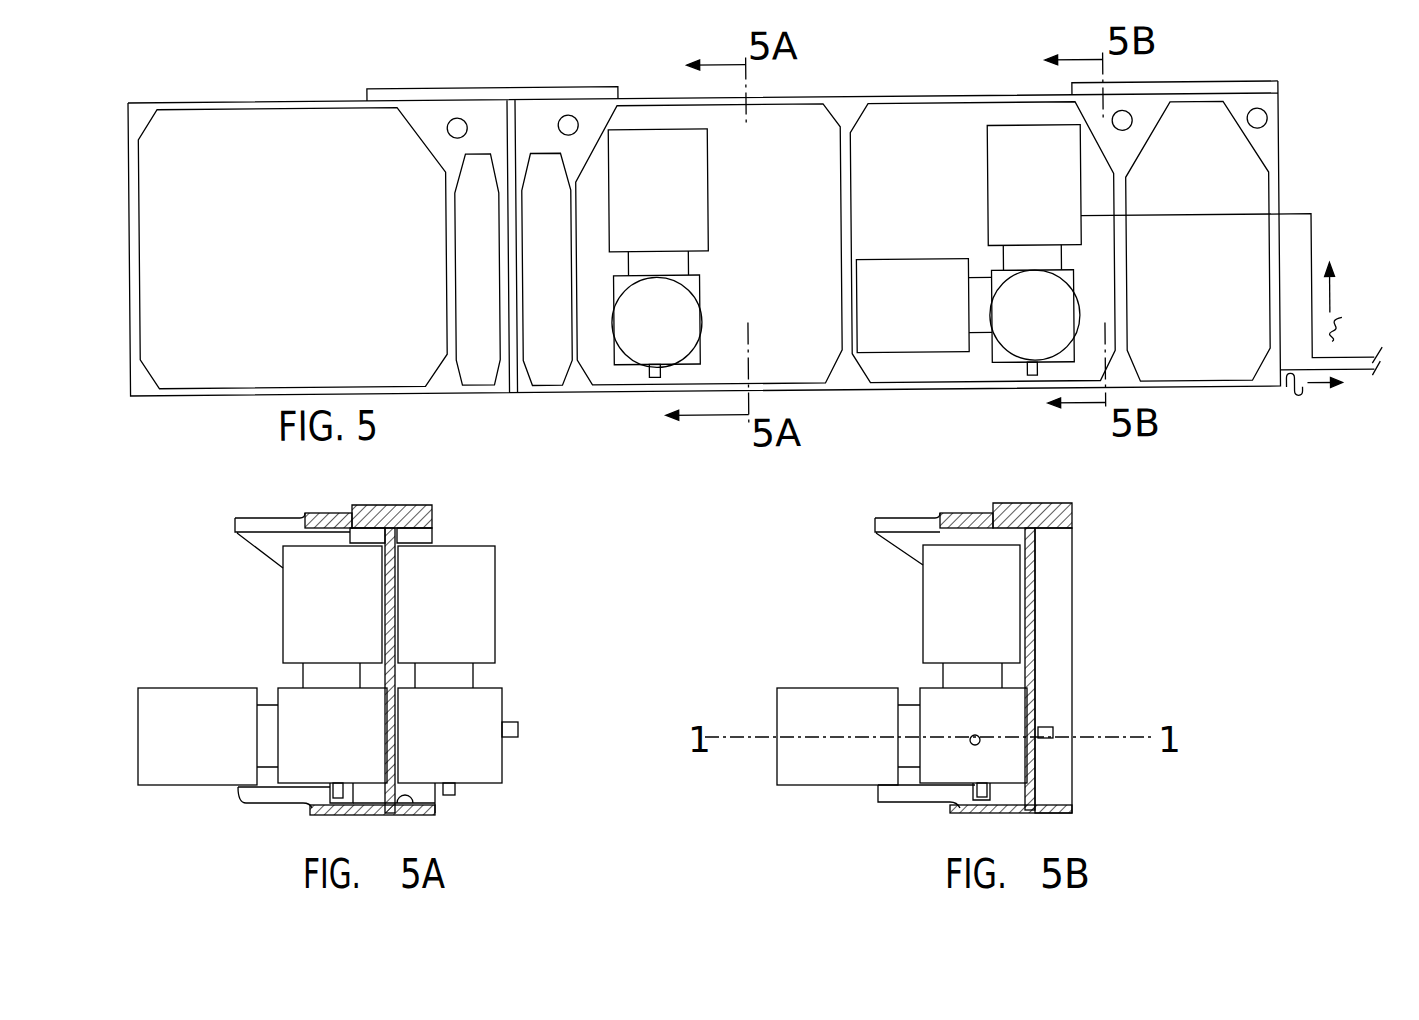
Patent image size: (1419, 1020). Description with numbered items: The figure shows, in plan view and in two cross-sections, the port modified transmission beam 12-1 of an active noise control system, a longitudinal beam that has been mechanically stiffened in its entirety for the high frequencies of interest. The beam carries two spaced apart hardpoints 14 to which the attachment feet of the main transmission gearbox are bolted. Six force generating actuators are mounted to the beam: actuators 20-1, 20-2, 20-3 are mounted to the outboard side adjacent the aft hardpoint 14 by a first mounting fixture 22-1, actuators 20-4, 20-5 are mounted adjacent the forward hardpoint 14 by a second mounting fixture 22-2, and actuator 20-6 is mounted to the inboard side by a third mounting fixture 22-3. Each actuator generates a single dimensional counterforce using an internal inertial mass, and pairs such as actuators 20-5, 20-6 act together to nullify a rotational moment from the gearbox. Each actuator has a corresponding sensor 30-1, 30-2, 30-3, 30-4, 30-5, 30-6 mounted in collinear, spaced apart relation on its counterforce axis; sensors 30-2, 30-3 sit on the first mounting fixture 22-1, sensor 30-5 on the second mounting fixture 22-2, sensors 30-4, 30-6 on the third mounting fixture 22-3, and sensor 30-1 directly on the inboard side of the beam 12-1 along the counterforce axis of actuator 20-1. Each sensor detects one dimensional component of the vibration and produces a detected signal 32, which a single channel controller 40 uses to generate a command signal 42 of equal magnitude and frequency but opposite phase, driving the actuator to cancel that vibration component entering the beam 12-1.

In FIG. 5, the hardpoint 14 is at (537, 91).
In FIG. 5A, the hardpoint 14 is at (400, 504).
In FIG. 5, the modified transmission beam 12-1 is at (314, 277).
In FIG. 5A, the modified transmission beam 12-1 is at (407, 817).
In FIG. 5B, the modified transmission beam 12-1 is at (1037, 617).
In FIG. 5, the actuator 20-1 is at (1060, 333).
In FIG. 5B, the actuator 20-1 is at (864, 743).
In FIG. 5, the actuator 20-2 is at (1058, 224).
In FIG. 5B, the actuator 20-2 is at (997, 607).
In FIG. 5, the actuator 20-3 is at (940, 320).
In FIG. 5, the actuator 20-4 is at (683, 341).
In FIG. 5A, the actuator 20-4 is at (226, 743).
In FIG. 5, the actuator 20-5 is at (683, 226).
In FIG. 5A, the actuator 20-5 is at (358, 605).
In FIG. 5A, the actuator 20-6 is at (475, 605).
In FIG. 5, the first mounting fixture 22-1 is at (997, 278).
In FIG. 5B, the first mounting fixture 22-1 is at (998, 716).
In FIG. 5, the second mounting fixture 22-2 is at (700, 292).
In FIG. 5A, the second mounting fixture 22-2 is at (362, 738).
In FIG. 5A, the third mounting fixture 22-3 is at (478, 738).
In FIG. 5B, the sensor 30-1 is at (1050, 723).
In FIG. 5, the sensor 30-2 is at (1030, 383).
In FIG. 5B, the sensor 30-2 is at (970, 792).
In FIG. 5B, the sensor 30-3 is at (970, 745).
In FIG. 5A, the sensor 30-4 is at (513, 712).
In FIG. 5, the sensor 30-5 is at (648, 388).
In FIG. 5A, the sensor 30-5 is at (317, 803).
In FIG. 5A, the sensor 30-6 is at (457, 790).
In FIG. 5, the detected signal 32 is at (1314, 399).
In FIG. 5, the single channel controller 40 is at (1250, 306).
In FIG. 5, the command signal 42 is at (1349, 301).